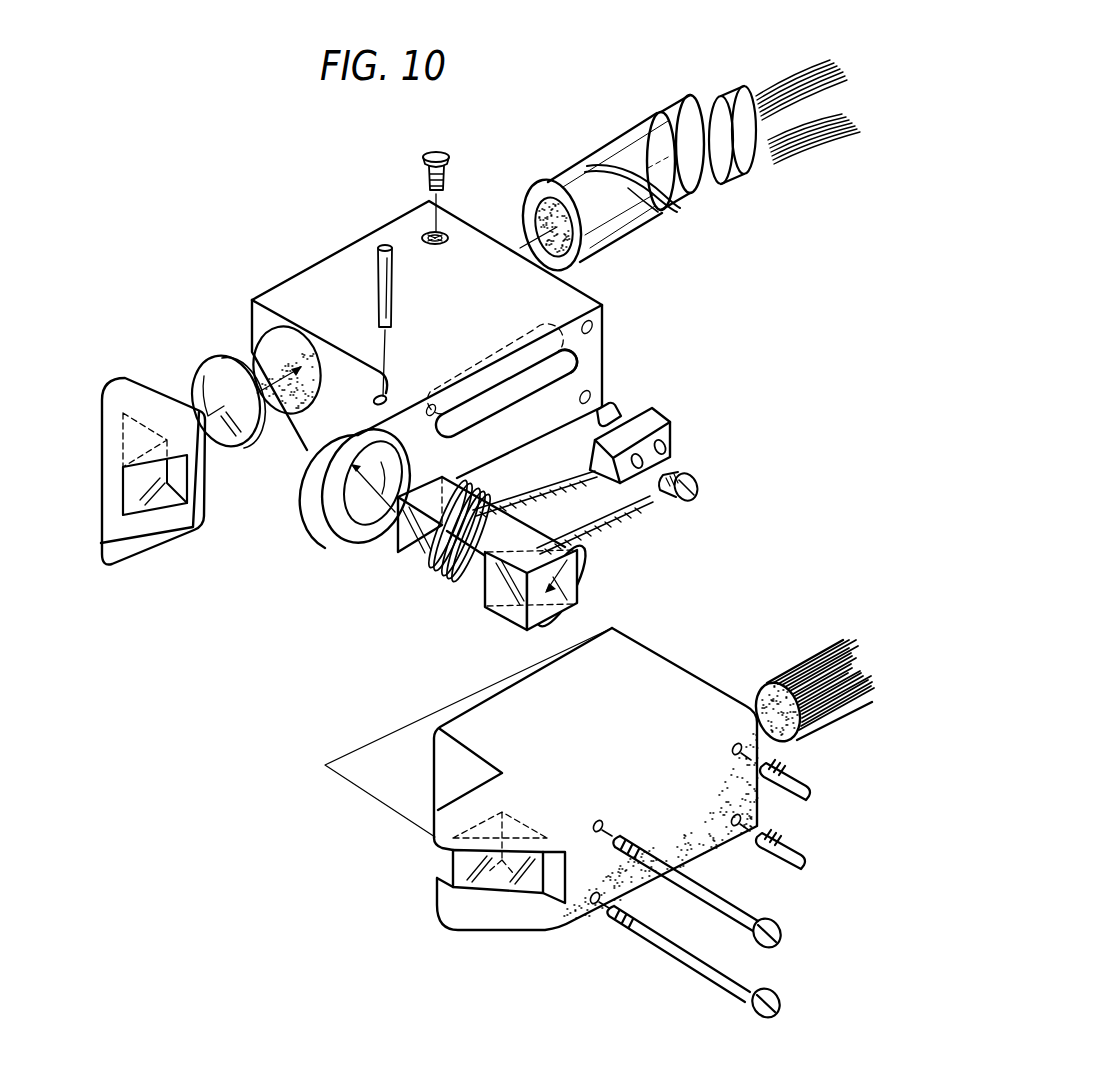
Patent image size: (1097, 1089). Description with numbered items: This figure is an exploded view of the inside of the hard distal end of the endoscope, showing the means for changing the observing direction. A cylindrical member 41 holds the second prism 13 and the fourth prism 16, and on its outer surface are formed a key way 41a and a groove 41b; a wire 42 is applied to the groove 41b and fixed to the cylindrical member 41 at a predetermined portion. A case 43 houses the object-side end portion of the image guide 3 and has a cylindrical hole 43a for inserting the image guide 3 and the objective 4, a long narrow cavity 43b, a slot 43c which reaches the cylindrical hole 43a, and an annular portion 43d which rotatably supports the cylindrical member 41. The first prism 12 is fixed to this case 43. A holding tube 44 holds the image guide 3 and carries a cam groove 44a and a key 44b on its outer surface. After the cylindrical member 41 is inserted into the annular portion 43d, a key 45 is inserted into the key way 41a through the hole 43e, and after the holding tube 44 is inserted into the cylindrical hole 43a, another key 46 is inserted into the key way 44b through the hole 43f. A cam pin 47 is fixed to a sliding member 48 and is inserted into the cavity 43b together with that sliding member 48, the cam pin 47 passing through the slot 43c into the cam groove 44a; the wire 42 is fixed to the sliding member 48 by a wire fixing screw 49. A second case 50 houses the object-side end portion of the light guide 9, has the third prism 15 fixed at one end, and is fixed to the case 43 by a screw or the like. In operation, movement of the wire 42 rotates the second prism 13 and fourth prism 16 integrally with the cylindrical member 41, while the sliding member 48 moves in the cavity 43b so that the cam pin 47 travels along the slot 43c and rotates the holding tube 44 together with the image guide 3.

The image guide 3 is at (535, 217).
The objective 4 is at (209, 366).
The light guide 9 is at (804, 658).
The first prism 12 is at (152, 494).
The second prism 13 is at (406, 556).
The third prism 15 is at (460, 863).
The fourth prism 16 is at (513, 608).
The cylindrical member 41 is at (497, 497).
The key way 41a is at (445, 570).
The groove 41b is at (463, 576).
The wire 42 is at (613, 527).
The case 43 is at (328, 252).
The cylindrical hole 43a is at (257, 338).
The long narrow cavity 43b is at (570, 366).
The slot 43c is at (493, 372).
The annular portion 43d is at (357, 527).
The hole 43e is at (386, 398).
The hole 43f is at (447, 239).
The holding tube 44 is at (610, 140).
The cam groove 44a is at (660, 218).
The key 44b is at (665, 114).
The key 45 is at (378, 283).
The key 46 is at (428, 166).
The cam pin 47 is at (617, 410).
The sliding member 48 is at (656, 412).
The wire fixing screw 49 is at (691, 474).
The case 50 is at (650, 682).